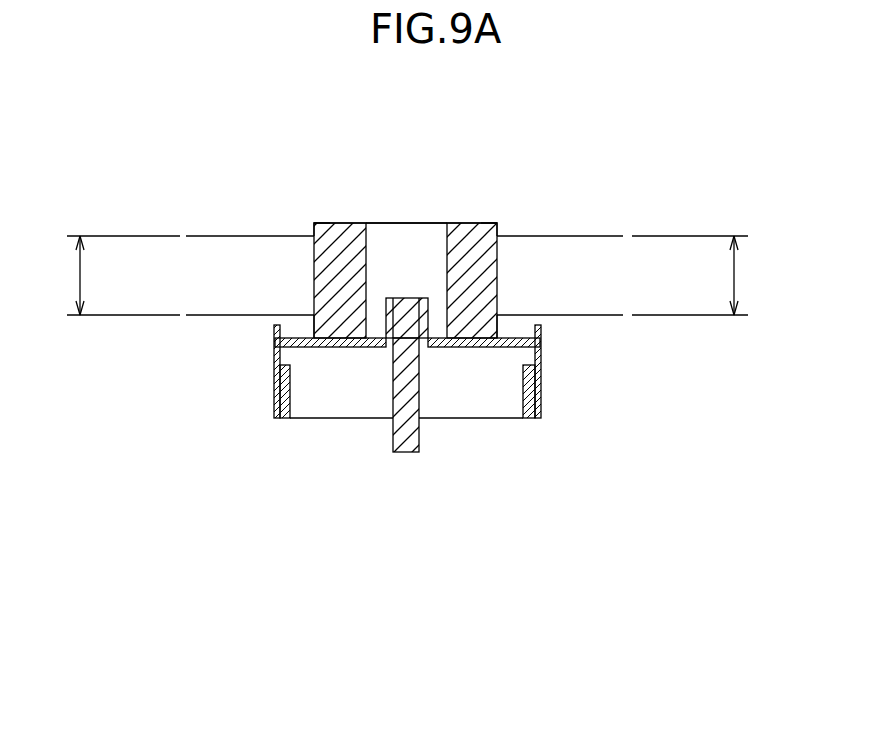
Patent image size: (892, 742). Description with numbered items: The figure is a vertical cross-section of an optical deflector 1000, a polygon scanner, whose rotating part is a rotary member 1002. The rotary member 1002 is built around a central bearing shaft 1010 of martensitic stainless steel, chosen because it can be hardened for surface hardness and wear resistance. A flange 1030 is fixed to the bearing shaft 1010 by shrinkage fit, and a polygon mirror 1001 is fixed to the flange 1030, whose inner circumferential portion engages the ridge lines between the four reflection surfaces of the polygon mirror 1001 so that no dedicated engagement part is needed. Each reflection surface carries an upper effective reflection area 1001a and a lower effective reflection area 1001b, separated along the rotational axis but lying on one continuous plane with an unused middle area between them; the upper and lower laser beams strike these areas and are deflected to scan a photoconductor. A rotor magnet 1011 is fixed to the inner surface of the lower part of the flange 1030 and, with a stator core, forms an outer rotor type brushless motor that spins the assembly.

The optical deflector 1000 is at (418, 97).
The polygon mirror 1001 is at (434, 220).
The effective reflection area 1001a is at (313, 235).
The effective reflection area 1001b is at (312, 318).
The rotary member 1002 is at (354, 210).
The bearing shaft 1010 is at (419, 430).
The rotor magnet 1011 is at (285, 418).
The flange 1030 is at (542, 397).